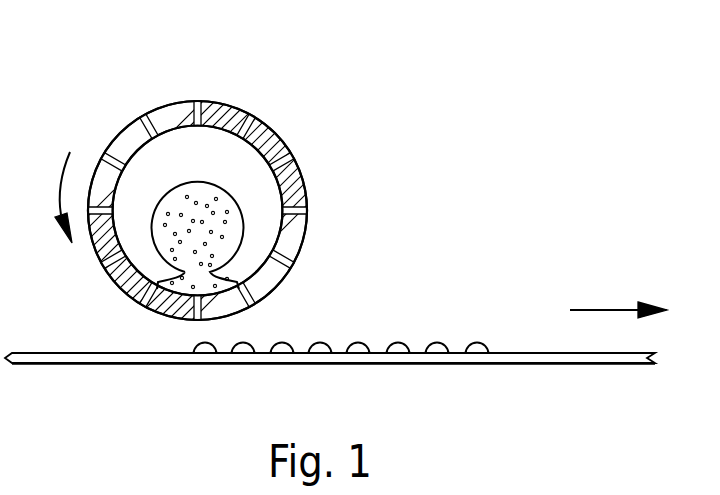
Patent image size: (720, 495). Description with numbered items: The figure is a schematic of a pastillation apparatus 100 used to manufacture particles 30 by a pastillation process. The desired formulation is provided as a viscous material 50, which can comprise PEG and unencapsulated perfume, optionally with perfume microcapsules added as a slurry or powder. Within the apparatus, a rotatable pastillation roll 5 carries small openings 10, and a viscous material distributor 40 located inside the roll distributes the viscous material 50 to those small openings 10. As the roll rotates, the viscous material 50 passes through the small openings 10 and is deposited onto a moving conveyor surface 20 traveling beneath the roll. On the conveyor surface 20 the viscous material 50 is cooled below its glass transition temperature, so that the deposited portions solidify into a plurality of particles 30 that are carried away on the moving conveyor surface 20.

The pastillation apparatus 100 is at (425, 83).
The rotatable pastillation roll 5 is at (250, 112).
The small openings 10 is at (303, 205).
The viscous material distributor 40 is at (207, 185).
The viscous material 50 is at (198, 228).
The particles 30 is at (323, 343).
The moving conveyor surface 20 is at (513, 353).